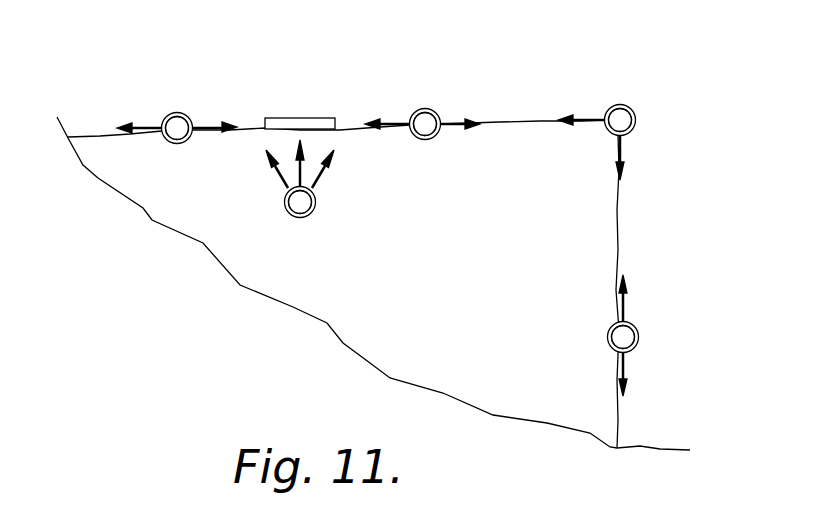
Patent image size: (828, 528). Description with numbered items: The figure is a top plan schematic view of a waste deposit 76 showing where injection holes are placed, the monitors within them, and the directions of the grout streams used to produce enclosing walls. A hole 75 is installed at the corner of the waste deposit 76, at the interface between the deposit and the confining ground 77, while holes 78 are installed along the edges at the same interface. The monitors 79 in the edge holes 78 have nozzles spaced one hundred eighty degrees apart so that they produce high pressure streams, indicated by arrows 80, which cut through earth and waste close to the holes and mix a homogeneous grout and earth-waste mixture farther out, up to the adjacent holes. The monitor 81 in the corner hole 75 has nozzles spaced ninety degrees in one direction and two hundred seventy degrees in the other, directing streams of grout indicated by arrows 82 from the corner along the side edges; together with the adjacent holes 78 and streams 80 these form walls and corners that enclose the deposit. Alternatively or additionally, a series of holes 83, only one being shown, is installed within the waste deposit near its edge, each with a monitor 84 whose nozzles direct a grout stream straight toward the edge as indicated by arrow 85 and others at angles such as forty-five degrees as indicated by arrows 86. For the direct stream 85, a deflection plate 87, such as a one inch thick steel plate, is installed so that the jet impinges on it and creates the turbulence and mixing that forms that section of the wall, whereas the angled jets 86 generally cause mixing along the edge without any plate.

The hole 75 is at (637, 120).
The waste deposit 76 is at (451, 274).
The confining ground 77 is at (653, 235).
The holes 78 is at (174, 112).
The monitors 79 is at (177, 132).
The arrows 80 is at (150, 126).
The monitor 81 is at (620, 110).
The arrows 82 is at (596, 119).
The holes 83 is at (310, 218).
The monitor 84 is at (297, 207).
The arrow 85 is at (305, 160).
The arrows 86 is at (283, 177).
The deflection plate 87 is at (293, 118).